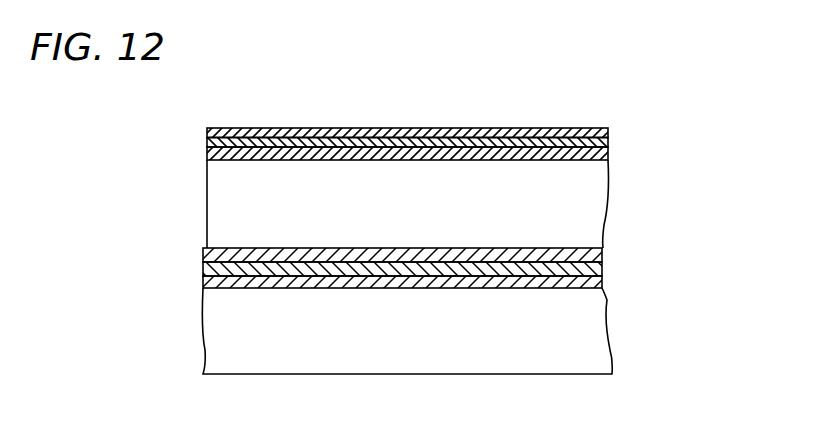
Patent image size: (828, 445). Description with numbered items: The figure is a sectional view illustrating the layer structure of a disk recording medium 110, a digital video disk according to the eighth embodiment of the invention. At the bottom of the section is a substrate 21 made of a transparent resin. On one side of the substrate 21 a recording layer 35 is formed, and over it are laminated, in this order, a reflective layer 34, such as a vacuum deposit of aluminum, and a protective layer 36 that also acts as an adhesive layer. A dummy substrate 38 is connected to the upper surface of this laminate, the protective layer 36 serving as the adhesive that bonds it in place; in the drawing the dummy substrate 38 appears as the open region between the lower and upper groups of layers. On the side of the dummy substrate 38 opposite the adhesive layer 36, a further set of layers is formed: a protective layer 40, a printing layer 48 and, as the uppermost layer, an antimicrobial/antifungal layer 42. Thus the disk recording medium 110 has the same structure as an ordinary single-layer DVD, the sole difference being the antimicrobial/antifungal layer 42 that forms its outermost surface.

The disk recording medium 110 is at (578, 100).
The antimicrobial/antifungal layer 42 is at (207, 130).
The printing layer 48 is at (207, 143).
The protective layer 40 is at (207, 155).
The dummy substrate 38 is at (196, 162).
The protective layer (adhesive layer) 36 is at (603, 253).
The reflective layer 34 is at (603, 275).
The recording layer 35 is at (603, 287).
The substrate 21 is at (625, 293).